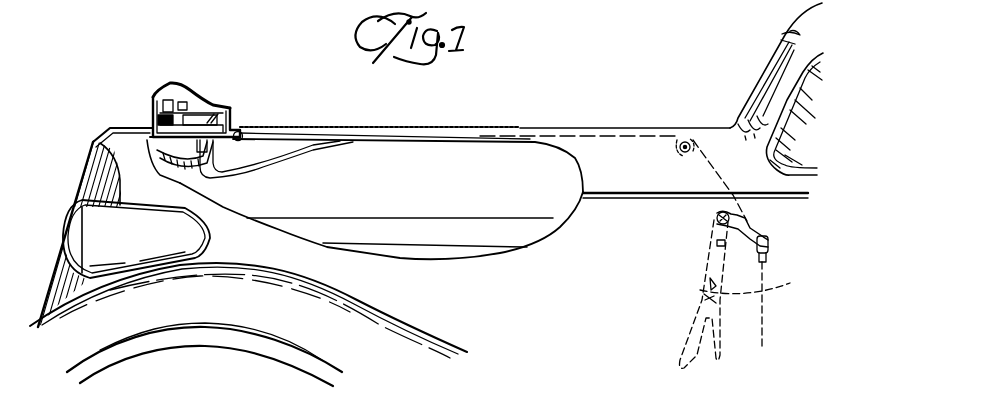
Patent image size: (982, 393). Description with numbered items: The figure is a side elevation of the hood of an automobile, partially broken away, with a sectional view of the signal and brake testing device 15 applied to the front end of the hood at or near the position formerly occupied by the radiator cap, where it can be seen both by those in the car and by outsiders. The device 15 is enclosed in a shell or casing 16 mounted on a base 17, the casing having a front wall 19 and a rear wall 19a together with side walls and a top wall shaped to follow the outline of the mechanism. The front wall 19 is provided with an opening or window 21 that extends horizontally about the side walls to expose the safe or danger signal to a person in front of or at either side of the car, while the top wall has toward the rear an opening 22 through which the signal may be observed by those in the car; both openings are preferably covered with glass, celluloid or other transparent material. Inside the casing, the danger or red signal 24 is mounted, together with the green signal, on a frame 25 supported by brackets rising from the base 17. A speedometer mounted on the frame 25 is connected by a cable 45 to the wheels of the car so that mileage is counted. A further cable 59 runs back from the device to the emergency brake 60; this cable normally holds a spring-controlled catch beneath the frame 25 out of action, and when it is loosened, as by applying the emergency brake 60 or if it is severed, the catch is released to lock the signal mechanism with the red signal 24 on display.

The signal and brake testing device 15 is at (214, 95).
The shell or casing 16 is at (160, 104).
The base 17 is at (148, 147).
The front wall 19 is at (152, 120).
The rear wall 19a is at (227, 108).
The opening or window 21 is at (155, 122).
The opening 22 is at (190, 112).
The danger signal 24 is at (153, 110).
The frame 25 is at (233, 127).
The cable 45 is at (175, 167).
The cable 59 is at (603, 133).
The emergency brake 60 is at (873, 253).